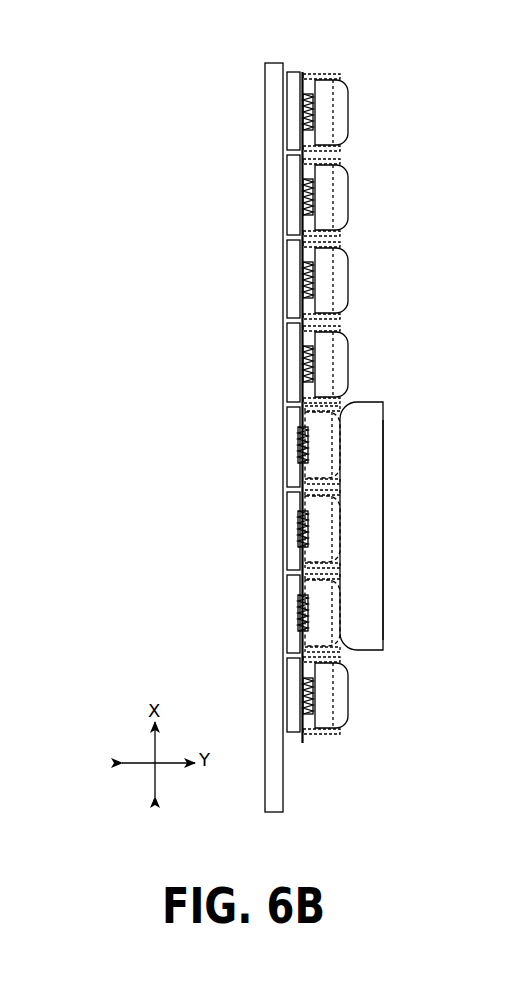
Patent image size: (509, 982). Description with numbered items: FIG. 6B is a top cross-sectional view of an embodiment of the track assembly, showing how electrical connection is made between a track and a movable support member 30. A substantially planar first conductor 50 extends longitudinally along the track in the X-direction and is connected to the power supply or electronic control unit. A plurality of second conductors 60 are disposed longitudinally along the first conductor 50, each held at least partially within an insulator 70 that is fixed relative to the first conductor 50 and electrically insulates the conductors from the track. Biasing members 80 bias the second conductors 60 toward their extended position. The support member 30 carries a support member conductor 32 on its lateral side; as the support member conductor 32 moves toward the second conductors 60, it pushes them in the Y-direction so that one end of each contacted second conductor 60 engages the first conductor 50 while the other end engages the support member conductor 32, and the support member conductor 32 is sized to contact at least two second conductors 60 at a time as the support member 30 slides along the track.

The support member 30 is at (386, 588).
The support member conductor 32 is at (370, 457).
The first conductor 50 is at (274, 121).
The second conductor 60 is at (351, 108).
The insulator 70 is at (307, 91).
The biasing member 80 is at (307, 101).